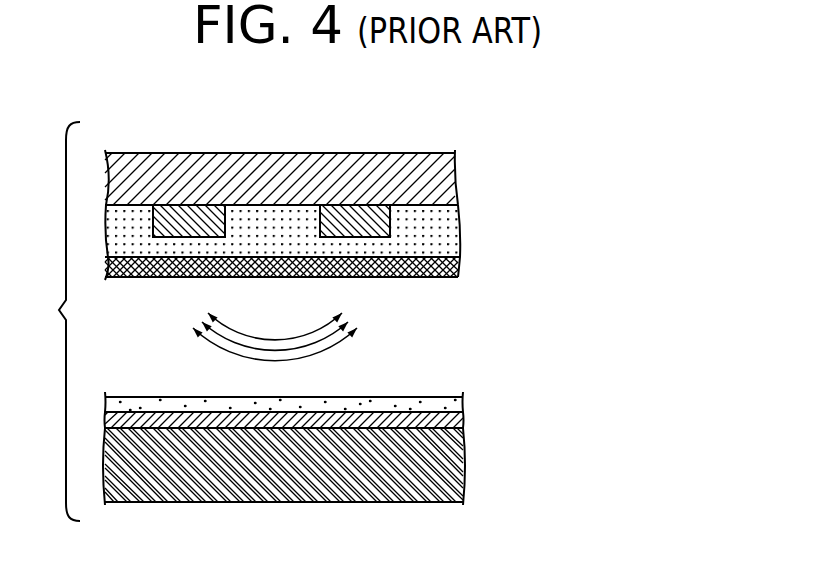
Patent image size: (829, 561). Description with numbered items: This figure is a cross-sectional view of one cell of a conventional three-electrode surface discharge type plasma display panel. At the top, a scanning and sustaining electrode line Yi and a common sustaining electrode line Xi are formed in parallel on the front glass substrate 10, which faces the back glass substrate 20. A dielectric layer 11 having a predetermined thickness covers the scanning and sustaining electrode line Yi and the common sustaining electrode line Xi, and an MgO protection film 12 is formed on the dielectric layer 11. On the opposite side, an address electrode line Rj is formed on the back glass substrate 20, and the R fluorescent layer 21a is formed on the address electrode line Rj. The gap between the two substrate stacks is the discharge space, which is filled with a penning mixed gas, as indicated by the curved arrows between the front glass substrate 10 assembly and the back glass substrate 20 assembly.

The front glass substrate 10 is at (433, 182).
The dielectric layer 11 is at (438, 227).
The MgO protection film 12 is at (453, 262).
The scanning and sustaining electrode line Yi is at (197, 217).
The common sustaining electrode line Xi is at (358, 215).
The address electrode line Rj is at (455, 397).
The R fluorescent layer 21a is at (443, 422).
The back glass substrate 20 is at (453, 463).